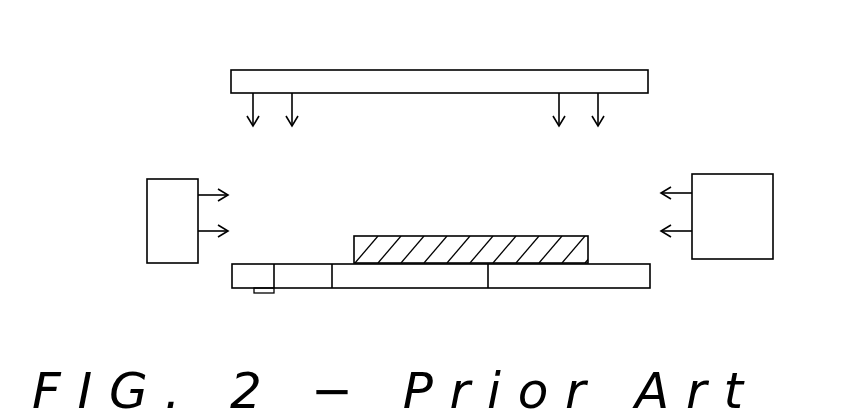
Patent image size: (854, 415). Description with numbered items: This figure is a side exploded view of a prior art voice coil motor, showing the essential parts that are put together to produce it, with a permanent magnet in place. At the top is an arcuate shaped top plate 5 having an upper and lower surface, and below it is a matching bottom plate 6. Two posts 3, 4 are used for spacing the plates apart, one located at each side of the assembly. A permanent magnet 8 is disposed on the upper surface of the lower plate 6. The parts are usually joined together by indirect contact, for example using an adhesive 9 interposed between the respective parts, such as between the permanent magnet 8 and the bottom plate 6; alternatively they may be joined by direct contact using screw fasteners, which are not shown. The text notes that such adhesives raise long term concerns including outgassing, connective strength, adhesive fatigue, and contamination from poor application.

The post 3 is at (158, 219).
The post 4 is at (762, 213).
The top plate 5 is at (415, 82).
The bottom plate 6 is at (451, 276).
The permanent magnet 8 is at (520, 252).
The adhesive 9 is at (353, 263).